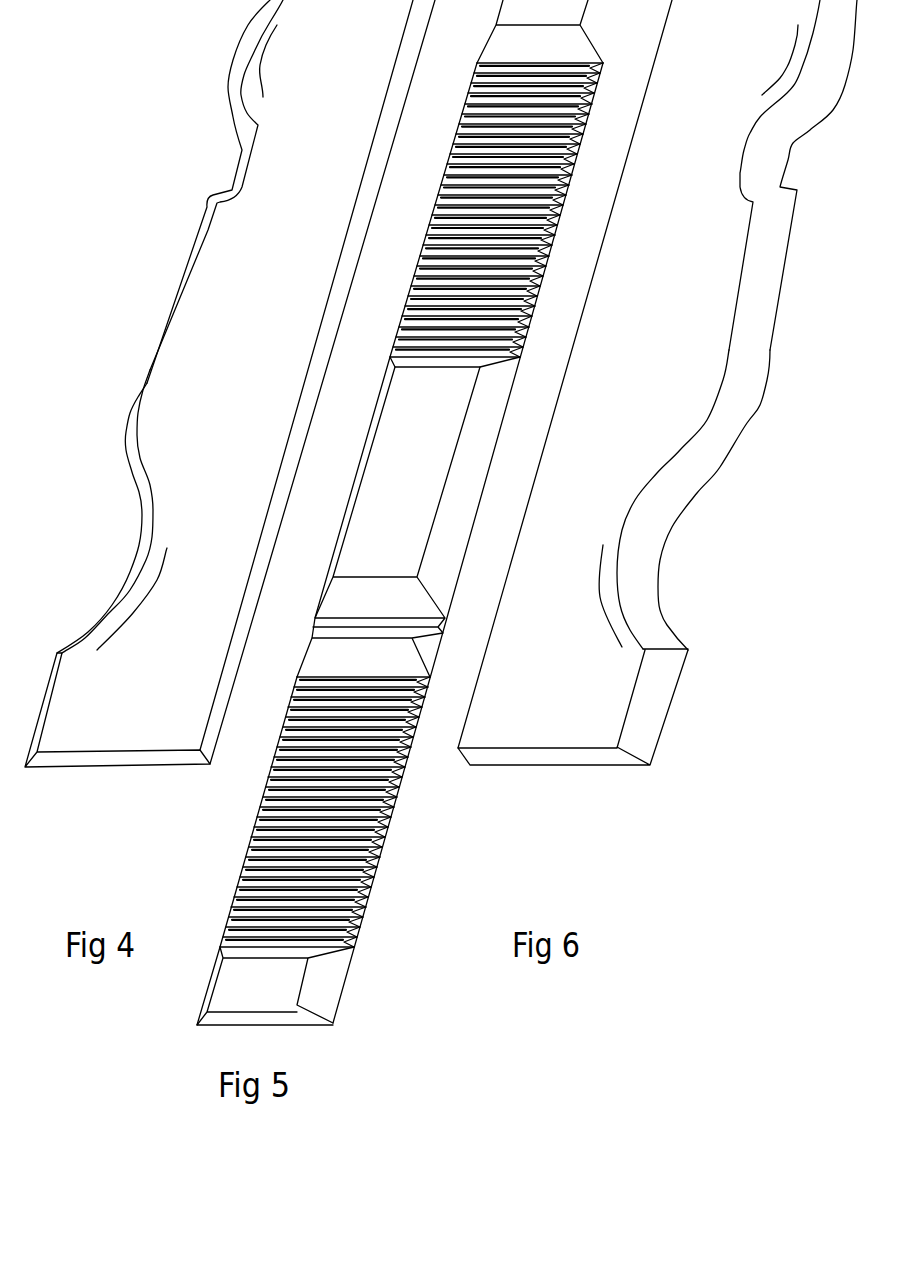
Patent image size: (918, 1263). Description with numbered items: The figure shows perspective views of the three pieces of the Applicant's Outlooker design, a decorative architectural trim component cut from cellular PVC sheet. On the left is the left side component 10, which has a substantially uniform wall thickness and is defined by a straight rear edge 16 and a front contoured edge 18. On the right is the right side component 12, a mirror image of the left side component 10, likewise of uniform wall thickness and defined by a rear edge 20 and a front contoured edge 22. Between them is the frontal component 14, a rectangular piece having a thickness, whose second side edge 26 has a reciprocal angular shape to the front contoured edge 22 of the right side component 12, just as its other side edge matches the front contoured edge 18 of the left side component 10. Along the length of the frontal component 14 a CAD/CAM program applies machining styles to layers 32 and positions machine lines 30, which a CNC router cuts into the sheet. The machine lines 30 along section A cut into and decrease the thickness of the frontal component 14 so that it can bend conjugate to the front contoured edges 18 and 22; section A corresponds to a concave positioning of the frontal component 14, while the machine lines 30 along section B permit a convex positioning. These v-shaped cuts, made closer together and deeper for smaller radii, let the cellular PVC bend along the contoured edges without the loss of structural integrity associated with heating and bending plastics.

In FIG. 4, the left side component 10 is at (230, 415).
In FIG. 6, the right side component 12 is at (657, 415).
In FIG. 5, the frontal component 14 is at (394, 512).
In FIG. 4, the rear edge 16 is at (218, 702).
In FIG. 4, the front contoured edge 18 is at (128, 430).
In FIG. 6, the rear edge 20 is at (480, 678).
In FIG. 6, the front contoured edge 22 is at (737, 325).
In FIG. 5, the second side edge 26 is at (398, 813).
In FIG. 5, the machine lines 30 is at (250, 807).
In FIG. 5, the layers 32 is at (460, 480).
In FIG. 4, the section A is at (138, 607).
In FIG. 6, the section A is at (600, 605).
In FIG. 4, the section B is at (263, 60).
In FIG. 6, the section B is at (792, 60).